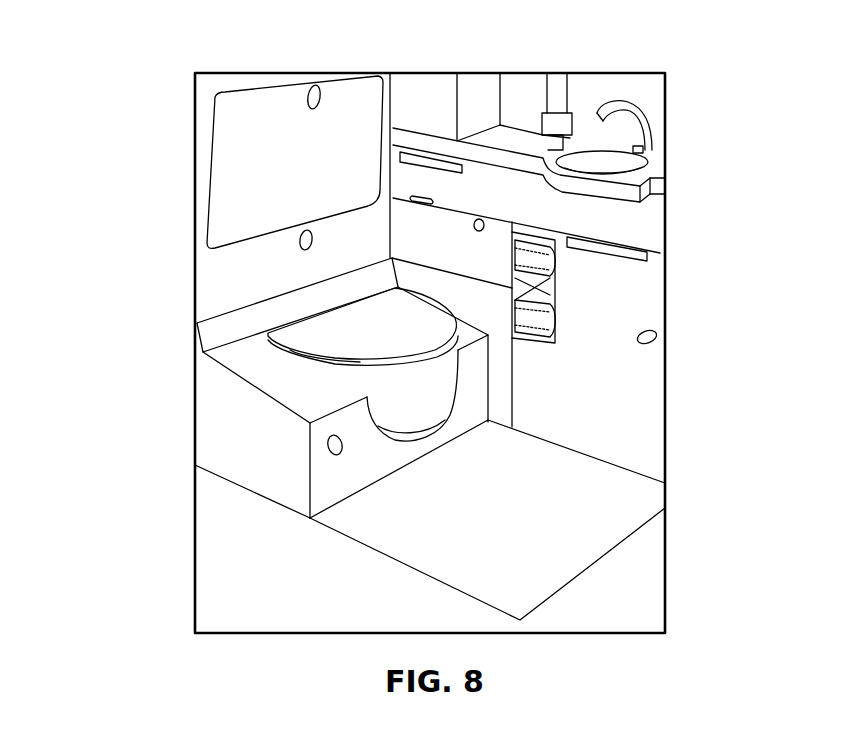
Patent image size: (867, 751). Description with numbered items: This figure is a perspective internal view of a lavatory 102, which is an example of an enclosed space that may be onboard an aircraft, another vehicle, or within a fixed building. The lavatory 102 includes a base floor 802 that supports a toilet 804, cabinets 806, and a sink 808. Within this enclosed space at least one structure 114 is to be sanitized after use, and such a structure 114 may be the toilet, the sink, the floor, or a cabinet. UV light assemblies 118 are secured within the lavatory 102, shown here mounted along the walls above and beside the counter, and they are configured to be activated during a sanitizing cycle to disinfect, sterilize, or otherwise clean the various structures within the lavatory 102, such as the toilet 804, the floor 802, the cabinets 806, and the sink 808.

The lavatory 102 is at (153, 93).
The structure 114 is at (477, 209).
The UV light assembly 118 is at (432, 160).
The base floor 802 is at (594, 536).
The toilet 804 is at (335, 330).
The cabinets 806 is at (615, 294).
The sink 808 is at (583, 160).